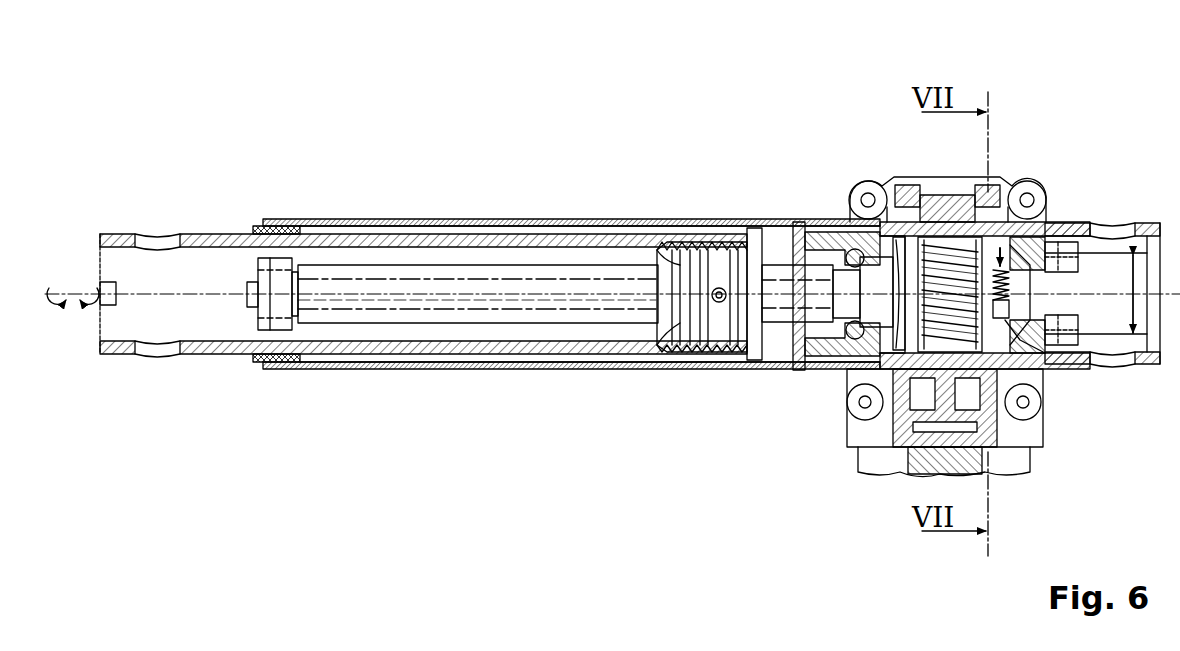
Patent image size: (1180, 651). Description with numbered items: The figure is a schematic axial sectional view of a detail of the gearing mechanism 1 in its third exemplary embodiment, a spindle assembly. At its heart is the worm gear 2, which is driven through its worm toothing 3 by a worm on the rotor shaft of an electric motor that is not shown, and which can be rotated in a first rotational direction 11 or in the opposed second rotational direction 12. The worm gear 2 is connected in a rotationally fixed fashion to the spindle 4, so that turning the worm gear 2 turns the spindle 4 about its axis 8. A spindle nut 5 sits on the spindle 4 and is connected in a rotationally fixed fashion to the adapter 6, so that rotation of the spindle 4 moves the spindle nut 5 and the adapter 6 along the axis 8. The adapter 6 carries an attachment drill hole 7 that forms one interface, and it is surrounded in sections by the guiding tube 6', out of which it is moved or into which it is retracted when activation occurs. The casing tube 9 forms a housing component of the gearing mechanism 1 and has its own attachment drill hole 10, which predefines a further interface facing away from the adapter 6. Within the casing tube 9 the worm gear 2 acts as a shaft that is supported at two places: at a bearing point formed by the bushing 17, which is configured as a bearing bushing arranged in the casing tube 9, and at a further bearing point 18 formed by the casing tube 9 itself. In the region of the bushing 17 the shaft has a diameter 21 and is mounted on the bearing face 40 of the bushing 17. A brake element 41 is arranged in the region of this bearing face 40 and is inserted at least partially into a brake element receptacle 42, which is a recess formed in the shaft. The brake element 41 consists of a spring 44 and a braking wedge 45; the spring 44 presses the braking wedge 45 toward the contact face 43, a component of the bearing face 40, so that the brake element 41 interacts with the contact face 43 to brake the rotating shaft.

The gearing mechanism 1 is at (255, 64).
The worm gear 2 is at (1060, 350).
The worm toothing 3 is at (940, 265).
The spindle 4 is at (777, 272).
The spindle nut 5 is at (703, 252).
The adapter 6 is at (566, 314).
The guiding tube 6' is at (571, 314).
The attachment drill hole 7 is at (157, 240).
The axis 8 is at (483, 284).
The casing tube 9 is at (1150, 234).
The attachment drill hole 10 is at (1114, 233).
The first rotational direction 11 is at (88, 306).
The second rotational direction 12 is at (60, 306).
The bushing 17 is at (1030, 265).
The further bearing point 18 is at (848, 252).
The diameter 21 is at (1150, 305).
The bearing face 40 is at (1048, 282).
The brake element 41 is at (1000, 246).
The brake element receptacle 42 is at (1010, 296).
The contact face 43 is at (1030, 405).
The spring 44 is at (1005, 278).
The braking wedge 45 is at (1012, 345).